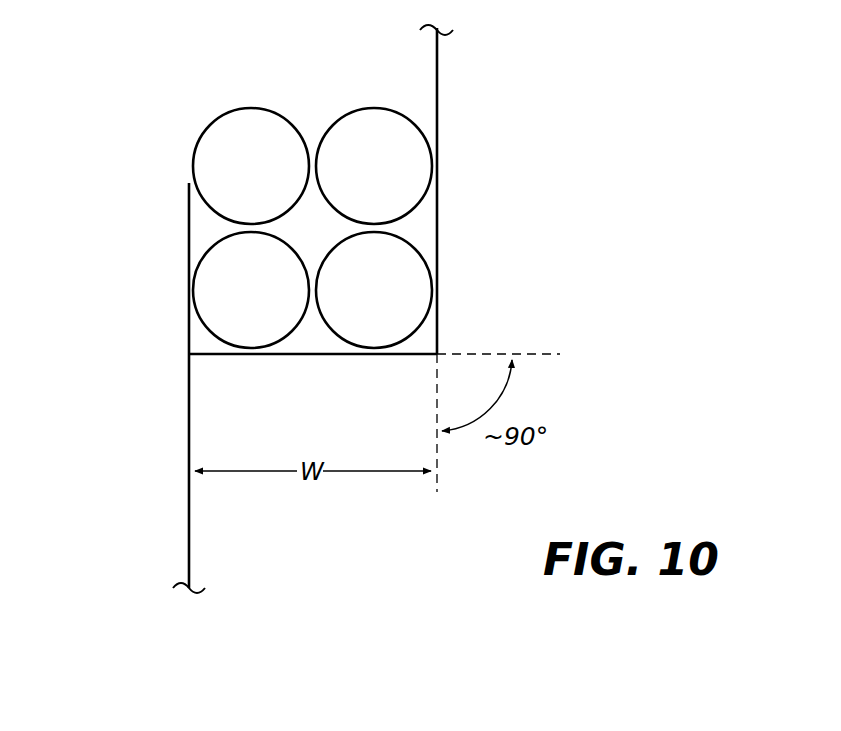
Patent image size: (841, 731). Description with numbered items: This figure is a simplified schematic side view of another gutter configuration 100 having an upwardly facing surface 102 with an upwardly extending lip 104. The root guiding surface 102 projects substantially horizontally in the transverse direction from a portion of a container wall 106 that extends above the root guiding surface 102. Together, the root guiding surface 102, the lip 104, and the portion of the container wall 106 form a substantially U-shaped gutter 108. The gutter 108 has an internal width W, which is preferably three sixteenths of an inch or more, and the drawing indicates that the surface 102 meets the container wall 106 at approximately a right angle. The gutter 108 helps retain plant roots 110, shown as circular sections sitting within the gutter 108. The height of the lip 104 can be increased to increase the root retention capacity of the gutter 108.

The gutter configuration 100 is at (386, 308).
The upwardly facing surface 102 is at (300, 355).
The upwardly extending lip 104 is at (189, 203).
The container wall 106 is at (437, 233).
The gutter 108 is at (210, 235).
The plant roots 110 is at (259, 186).